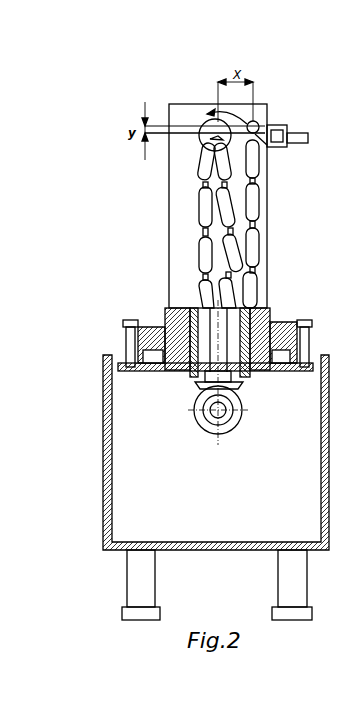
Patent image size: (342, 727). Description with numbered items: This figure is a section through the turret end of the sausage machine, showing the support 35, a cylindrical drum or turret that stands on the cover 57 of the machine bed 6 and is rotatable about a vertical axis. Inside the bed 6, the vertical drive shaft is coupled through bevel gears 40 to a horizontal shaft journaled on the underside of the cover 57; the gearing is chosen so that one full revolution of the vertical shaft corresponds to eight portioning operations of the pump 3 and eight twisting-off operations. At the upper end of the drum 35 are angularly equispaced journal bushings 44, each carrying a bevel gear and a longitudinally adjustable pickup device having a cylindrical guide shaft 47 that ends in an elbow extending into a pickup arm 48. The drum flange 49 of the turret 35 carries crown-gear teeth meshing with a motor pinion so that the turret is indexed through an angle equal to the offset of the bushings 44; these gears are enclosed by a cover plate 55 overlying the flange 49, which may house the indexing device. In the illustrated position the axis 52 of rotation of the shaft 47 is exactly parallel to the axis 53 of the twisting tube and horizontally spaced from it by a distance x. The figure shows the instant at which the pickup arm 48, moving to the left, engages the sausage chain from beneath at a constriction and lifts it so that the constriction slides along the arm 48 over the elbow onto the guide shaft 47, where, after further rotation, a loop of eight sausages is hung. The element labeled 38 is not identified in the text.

The pump 3 is at (222, 450).
The machine bed 6 is at (218, 550).
The support 35 is at (169, 230).
The hub bearing block 38 is at (172, 307).
The bevel gears 40 is at (200, 390).
The journal bushings 44 is at (279, 125).
The cylindrical guide shaft 47 is at (295, 133).
The pickup arm 48 is at (266, 146).
The drum flange 49 is at (277, 363).
The axis of rotation 52 is at (200, 133).
The axis of tube 53 is at (256, 122).
The cover plate 55 is at (282, 321).
The cover 57 is at (311, 349).